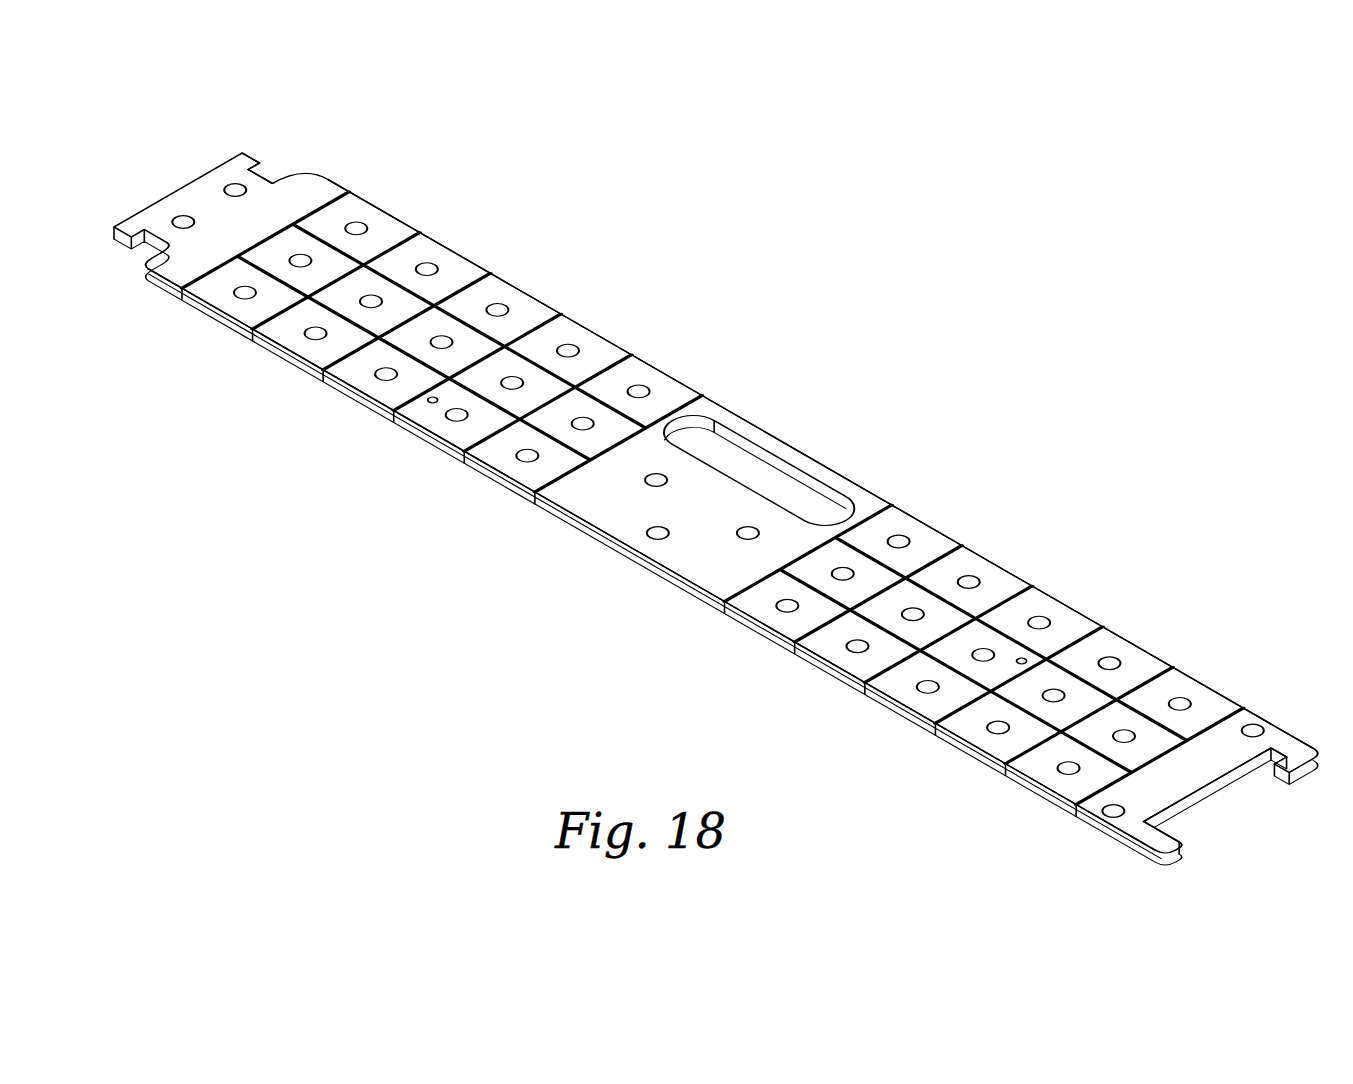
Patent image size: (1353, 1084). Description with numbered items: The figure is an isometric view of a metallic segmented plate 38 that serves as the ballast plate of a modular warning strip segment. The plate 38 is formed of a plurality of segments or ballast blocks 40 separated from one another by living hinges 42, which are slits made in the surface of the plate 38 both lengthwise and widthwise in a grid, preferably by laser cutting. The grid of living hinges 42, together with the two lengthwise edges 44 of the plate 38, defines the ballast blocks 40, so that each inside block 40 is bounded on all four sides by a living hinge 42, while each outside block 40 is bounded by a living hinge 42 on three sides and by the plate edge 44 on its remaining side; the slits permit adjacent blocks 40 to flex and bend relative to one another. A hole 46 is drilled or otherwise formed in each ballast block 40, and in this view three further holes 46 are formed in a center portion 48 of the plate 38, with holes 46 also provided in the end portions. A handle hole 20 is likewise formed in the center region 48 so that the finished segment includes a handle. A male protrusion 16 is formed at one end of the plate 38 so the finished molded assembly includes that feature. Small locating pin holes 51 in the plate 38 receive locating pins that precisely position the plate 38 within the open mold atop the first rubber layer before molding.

The segmented plate 38 is at (469, 546).
The male protrusion 16 is at (255, 153).
The handle hole 20 is at (758, 458).
The ballast block 40 is at (985, 573).
The living hinge 42 is at (398, 282).
The lengthwise edge 44 is at (400, 217).
The hole 46 is at (232, 186).
The center portion 48 is at (1223, 777).
The locating pin hole 51 is at (430, 406).